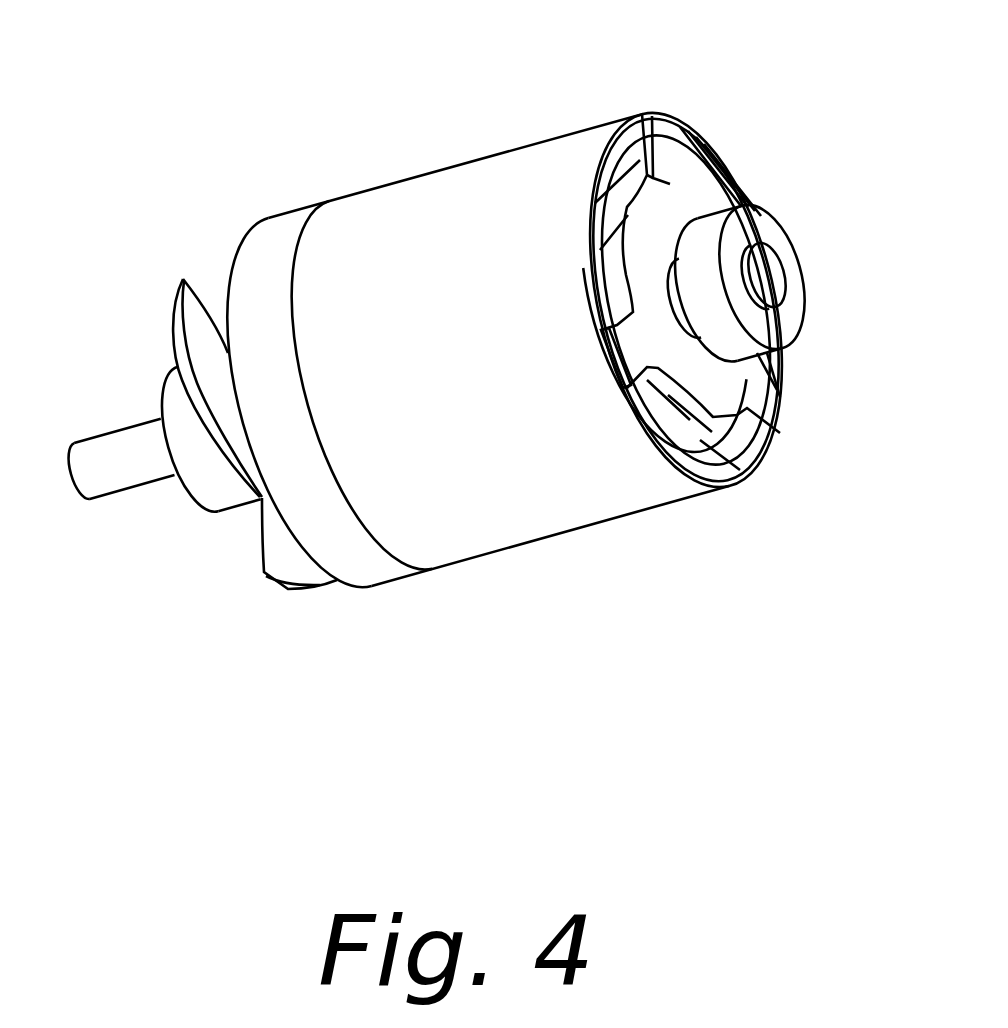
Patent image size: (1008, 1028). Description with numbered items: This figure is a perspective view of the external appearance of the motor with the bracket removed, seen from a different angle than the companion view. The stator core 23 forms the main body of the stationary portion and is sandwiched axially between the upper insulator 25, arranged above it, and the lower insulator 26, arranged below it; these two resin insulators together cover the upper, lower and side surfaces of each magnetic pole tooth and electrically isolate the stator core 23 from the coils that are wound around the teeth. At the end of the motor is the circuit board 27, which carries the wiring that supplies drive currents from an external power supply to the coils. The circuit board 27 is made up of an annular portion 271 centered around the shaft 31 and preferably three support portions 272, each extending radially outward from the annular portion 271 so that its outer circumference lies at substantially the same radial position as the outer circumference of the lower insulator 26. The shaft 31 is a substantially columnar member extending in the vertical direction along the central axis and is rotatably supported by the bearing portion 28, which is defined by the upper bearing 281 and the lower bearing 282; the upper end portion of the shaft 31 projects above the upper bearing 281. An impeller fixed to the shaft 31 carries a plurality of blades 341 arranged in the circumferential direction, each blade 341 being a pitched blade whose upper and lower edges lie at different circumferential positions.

The stator core 23 is at (387, 235).
The upper insulator 25 is at (268, 247).
The lower insulator 26 is at (572, 160).
The circuit board 27 is at (855, 99).
The annular portion 271 is at (663, 220).
The support portion 272 is at (668, 150).
The bearing portion 28 is at (604, 682).
The upper bearing 281 is at (210, 480).
The lower bearing 282 is at (720, 323).
The shaft 31 is at (92, 465).
The blade 341 is at (185, 308).